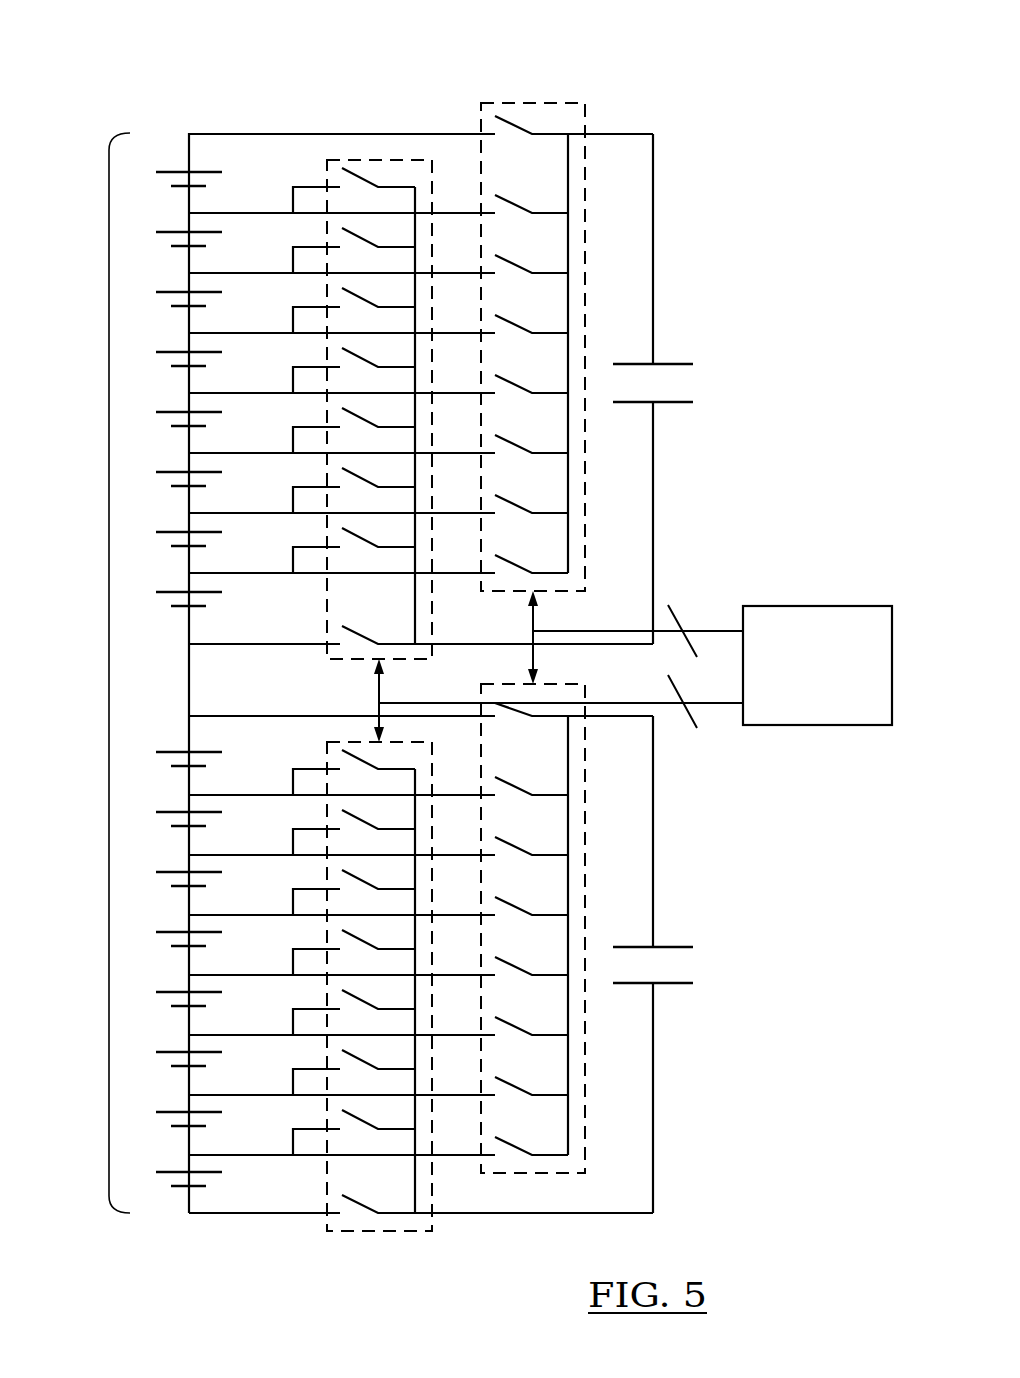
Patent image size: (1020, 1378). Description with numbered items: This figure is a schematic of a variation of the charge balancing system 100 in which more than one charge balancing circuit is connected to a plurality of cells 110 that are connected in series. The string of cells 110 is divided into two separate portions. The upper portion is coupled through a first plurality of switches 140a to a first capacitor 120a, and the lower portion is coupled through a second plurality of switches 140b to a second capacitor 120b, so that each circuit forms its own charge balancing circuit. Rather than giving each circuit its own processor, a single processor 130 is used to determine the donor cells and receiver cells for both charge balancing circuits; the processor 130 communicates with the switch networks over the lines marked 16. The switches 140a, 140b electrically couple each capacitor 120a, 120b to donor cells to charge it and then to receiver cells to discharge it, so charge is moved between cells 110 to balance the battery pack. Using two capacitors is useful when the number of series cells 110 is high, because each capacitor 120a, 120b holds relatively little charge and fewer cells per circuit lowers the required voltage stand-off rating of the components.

The charge balancing system 100 is at (142, 82).
The cells 110 is at (109, 669).
The first plurality of switches 140a is at (500, 103).
The second plurality of switches 140b is at (422, 1231).
The first capacitor 120a is at (711, 381).
The second capacitor 120b is at (710, 969).
The processor 130 is at (817, 665).
The communication bus 16 is at (561, 666).